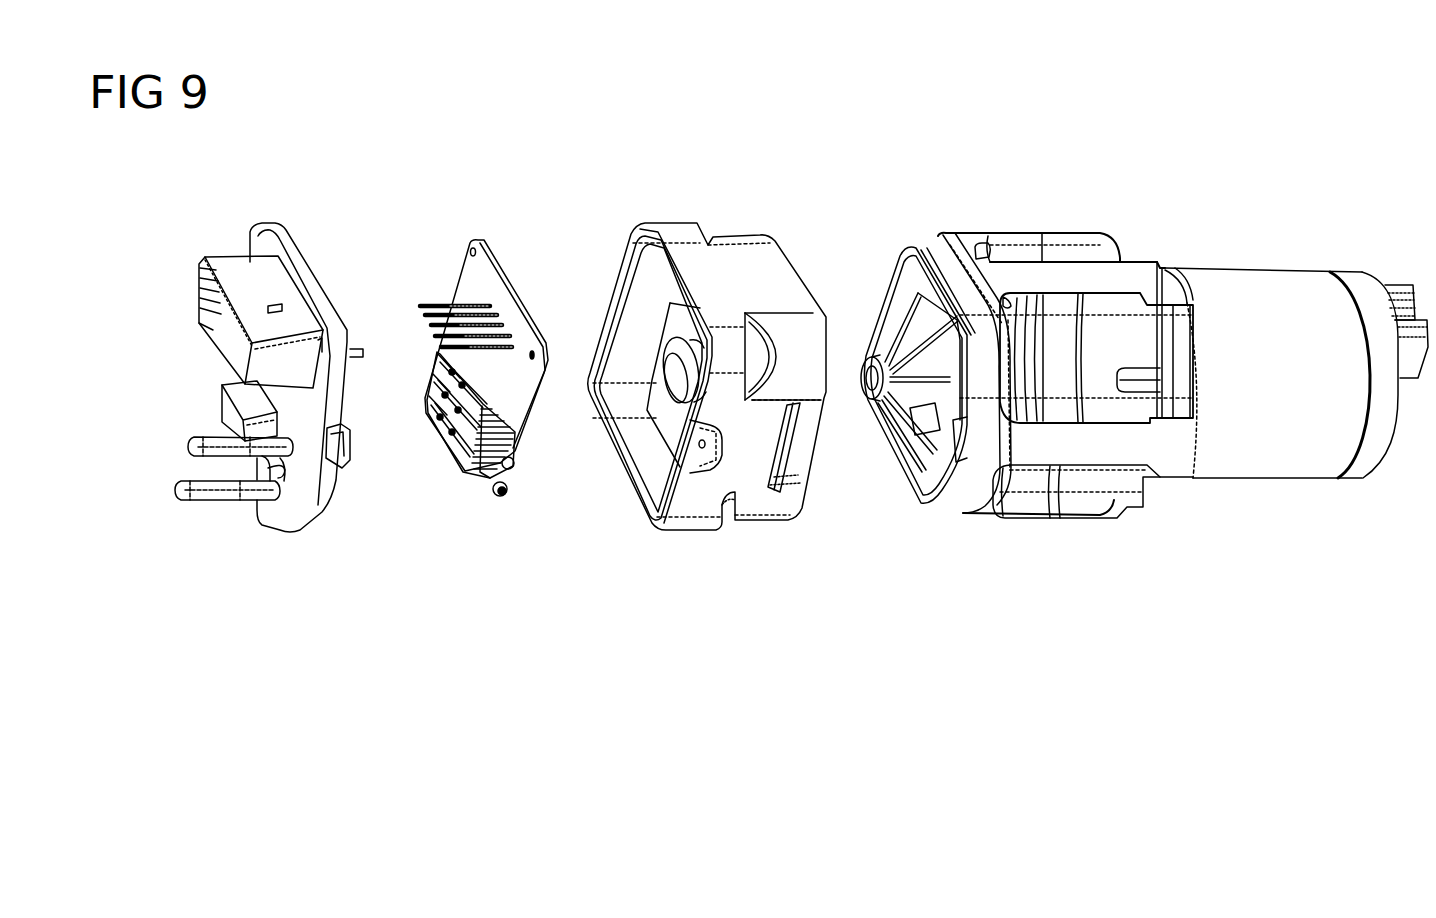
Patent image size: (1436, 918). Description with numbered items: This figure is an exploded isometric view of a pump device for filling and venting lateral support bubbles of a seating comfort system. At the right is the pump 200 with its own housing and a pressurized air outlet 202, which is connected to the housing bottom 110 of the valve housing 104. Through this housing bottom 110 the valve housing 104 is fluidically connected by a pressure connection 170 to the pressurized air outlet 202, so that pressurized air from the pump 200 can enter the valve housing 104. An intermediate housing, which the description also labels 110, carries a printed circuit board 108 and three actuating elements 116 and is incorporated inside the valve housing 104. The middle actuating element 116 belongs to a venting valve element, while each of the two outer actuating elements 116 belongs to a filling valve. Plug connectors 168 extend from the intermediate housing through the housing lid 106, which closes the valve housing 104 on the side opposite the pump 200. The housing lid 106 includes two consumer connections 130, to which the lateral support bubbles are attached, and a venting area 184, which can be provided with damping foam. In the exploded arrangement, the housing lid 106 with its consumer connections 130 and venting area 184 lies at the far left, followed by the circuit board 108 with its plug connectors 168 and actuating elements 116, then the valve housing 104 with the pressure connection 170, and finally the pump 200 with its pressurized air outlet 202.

The valve housing 104 is at (683, 302).
The housing lid 106 is at (283, 243).
The circuit board 108 is at (493, 262).
The housing bottom 110 is at (753, 237).
The actuating element 116 is at (497, 478).
The consumer connection 130 is at (207, 490).
The plug connector 168 is at (445, 307).
The pressure connection 170 is at (670, 380).
The venting area 184 is at (220, 420).
The pump 200 is at (1127, 348).
The pressurized air outlet 202 is at (867, 367).